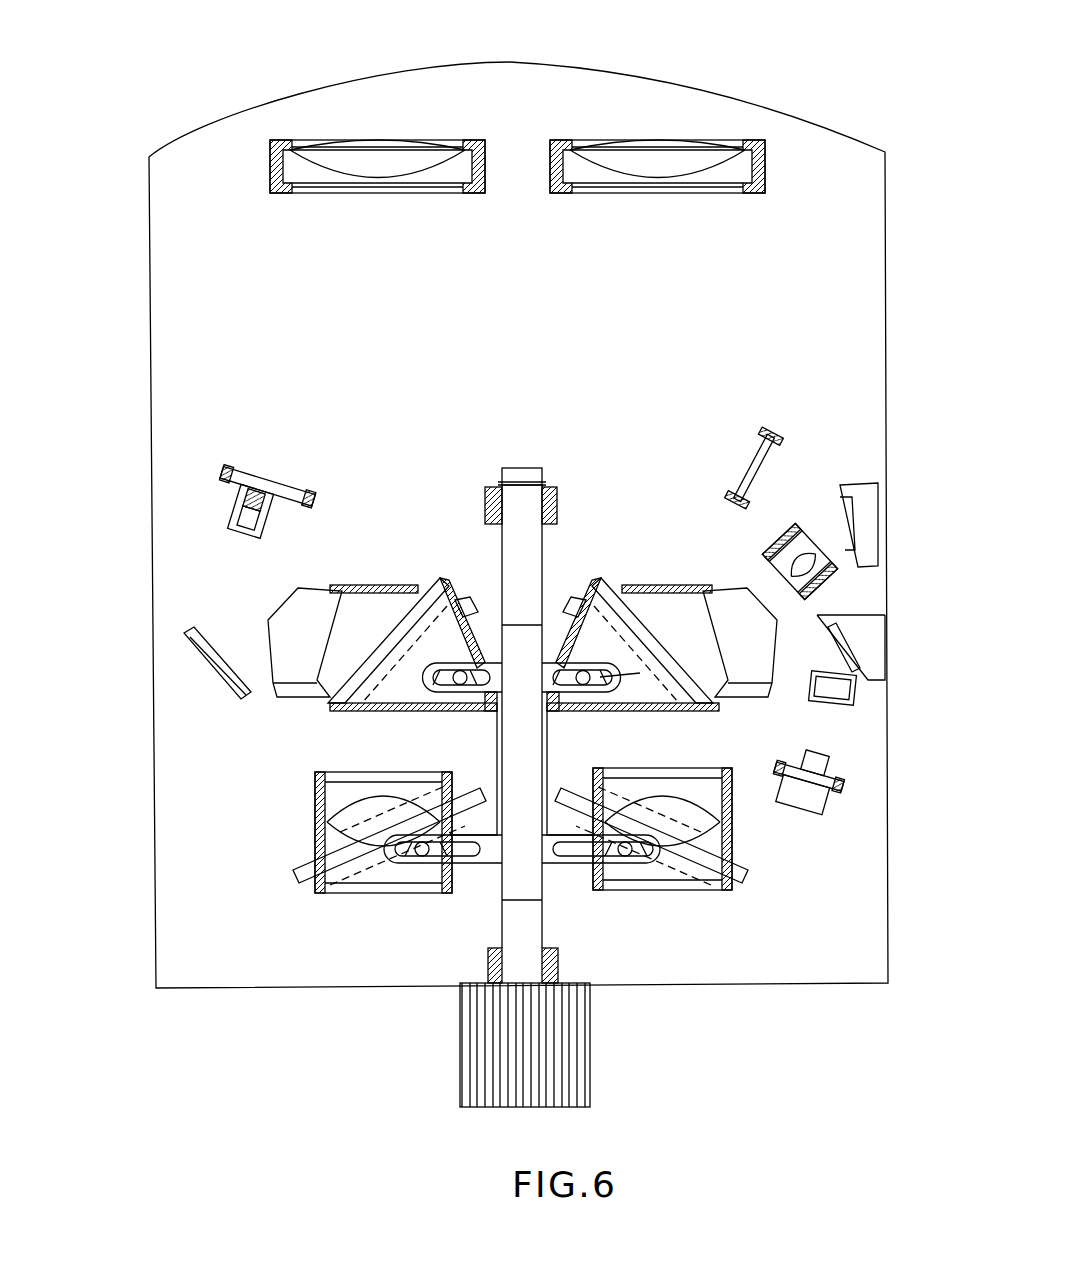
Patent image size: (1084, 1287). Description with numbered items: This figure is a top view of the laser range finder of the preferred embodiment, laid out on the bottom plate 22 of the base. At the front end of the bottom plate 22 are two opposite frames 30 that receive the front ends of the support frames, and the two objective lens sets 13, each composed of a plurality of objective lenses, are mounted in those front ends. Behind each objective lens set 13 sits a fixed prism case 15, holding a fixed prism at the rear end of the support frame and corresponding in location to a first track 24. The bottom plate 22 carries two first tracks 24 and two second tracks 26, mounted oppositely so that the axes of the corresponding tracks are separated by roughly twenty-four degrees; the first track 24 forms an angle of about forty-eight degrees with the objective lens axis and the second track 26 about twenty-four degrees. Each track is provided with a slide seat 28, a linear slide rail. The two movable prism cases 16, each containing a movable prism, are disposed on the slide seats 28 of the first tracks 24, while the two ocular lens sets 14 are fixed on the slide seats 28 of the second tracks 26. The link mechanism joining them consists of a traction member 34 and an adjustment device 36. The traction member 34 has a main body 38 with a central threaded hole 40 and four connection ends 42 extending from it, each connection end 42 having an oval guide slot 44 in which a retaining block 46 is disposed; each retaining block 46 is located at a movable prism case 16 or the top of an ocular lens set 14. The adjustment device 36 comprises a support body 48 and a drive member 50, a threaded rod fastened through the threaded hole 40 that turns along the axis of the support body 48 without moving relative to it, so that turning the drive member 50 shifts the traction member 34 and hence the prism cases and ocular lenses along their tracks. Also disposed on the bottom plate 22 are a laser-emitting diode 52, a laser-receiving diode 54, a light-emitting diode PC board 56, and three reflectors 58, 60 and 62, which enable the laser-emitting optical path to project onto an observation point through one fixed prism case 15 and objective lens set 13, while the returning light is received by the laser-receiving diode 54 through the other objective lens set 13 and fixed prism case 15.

The objective lens set 13 is at (645, 162).
The frame 30 is at (765, 157).
The support body 48 is at (560, 495).
The laser-receiving diode 54 is at (253, 498).
The reflector 58 is at (868, 502).
The light-emitting diode PC board 56 is at (840, 582).
The fixed prism case 15 is at (287, 612).
The reflector 62 is at (190, 648).
The movable prism case 16 is at (380, 660).
The reflector 60 is at (872, 630).
The retaining block 46 is at (640, 673).
The oval guide slot 44 is at (815, 695).
The slide seat 28 is at (355, 692).
The first track 24 is at (355, 718).
The laser-emitting diode 52 is at (823, 758).
The ocular lens set 14 is at (318, 797).
The second track 26 is at (305, 882).
The adjustment device 36 is at (494, 885).
The connection end 42 is at (548, 803).
The threaded hole 40 is at (553, 815).
The main body 38 is at (560, 852).
The drive member 50 is at (577, 1070).
The traction member 34 is at (575, 810).
The bottom plate 22 is at (851, 965).